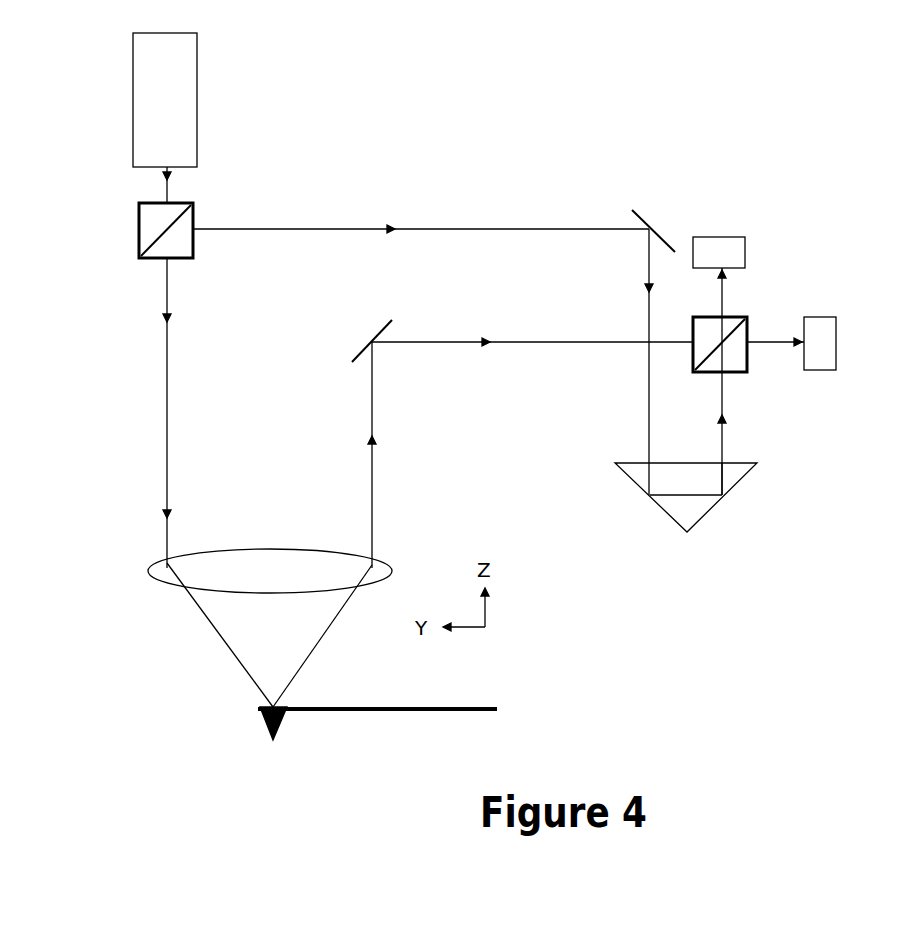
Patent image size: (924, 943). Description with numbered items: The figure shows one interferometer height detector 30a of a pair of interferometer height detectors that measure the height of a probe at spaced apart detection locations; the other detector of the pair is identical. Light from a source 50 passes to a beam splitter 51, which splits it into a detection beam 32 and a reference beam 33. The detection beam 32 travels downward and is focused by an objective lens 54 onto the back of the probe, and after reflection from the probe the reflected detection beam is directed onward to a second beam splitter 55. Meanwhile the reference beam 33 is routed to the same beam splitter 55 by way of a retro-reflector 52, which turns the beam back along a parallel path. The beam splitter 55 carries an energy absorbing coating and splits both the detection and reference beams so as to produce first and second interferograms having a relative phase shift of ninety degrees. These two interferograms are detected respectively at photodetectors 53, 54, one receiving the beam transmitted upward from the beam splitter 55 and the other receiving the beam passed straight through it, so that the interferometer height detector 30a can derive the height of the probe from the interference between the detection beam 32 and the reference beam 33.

The interferometer height detector 30a is at (625, 637).
The source 50 is at (197, 47).
The beam splitter 51 is at (155, 217).
The reference beam 33 is at (343, 228).
The detection beam 32 is at (160, 370).
The objective lens / photodetector 54 is at (263, 558).
The retro-reflector 52 is at (698, 518).
The beam splitter 55 is at (730, 372).
The photodetector 53 is at (745, 247).